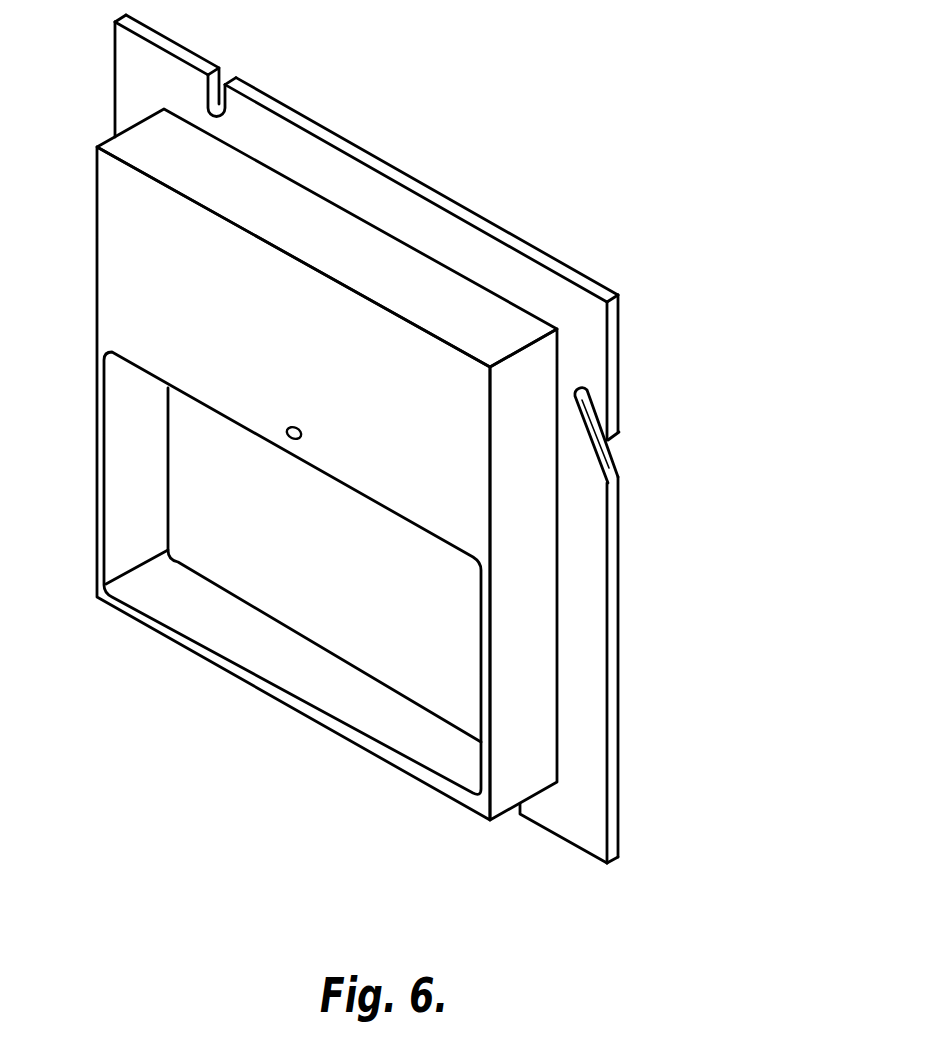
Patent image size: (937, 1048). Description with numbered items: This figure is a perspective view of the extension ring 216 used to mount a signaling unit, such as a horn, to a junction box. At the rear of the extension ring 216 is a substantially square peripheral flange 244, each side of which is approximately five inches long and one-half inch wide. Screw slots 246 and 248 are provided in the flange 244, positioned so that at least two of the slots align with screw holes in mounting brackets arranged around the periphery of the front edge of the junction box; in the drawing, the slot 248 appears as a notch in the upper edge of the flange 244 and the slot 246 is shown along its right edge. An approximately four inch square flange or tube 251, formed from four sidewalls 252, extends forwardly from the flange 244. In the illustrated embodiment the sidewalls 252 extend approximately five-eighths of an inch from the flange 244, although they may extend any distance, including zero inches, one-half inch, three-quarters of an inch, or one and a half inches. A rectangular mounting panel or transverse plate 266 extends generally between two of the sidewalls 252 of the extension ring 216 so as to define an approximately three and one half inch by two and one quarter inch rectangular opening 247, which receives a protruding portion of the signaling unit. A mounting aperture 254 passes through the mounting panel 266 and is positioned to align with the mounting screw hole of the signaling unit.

The extension ring 216 is at (707, 308).
The peripheral flange 244 is at (590, 733).
The screw slot 246 is at (610, 450).
The rectangular opening 247 is at (268, 557).
The screw slot 248 is at (208, 90).
The square flange or tube 251 is at (272, 200).
The sidewall 252 is at (373, 235).
The mounting aperture 254 is at (287, 434).
The mounting panel 266 is at (365, 345).